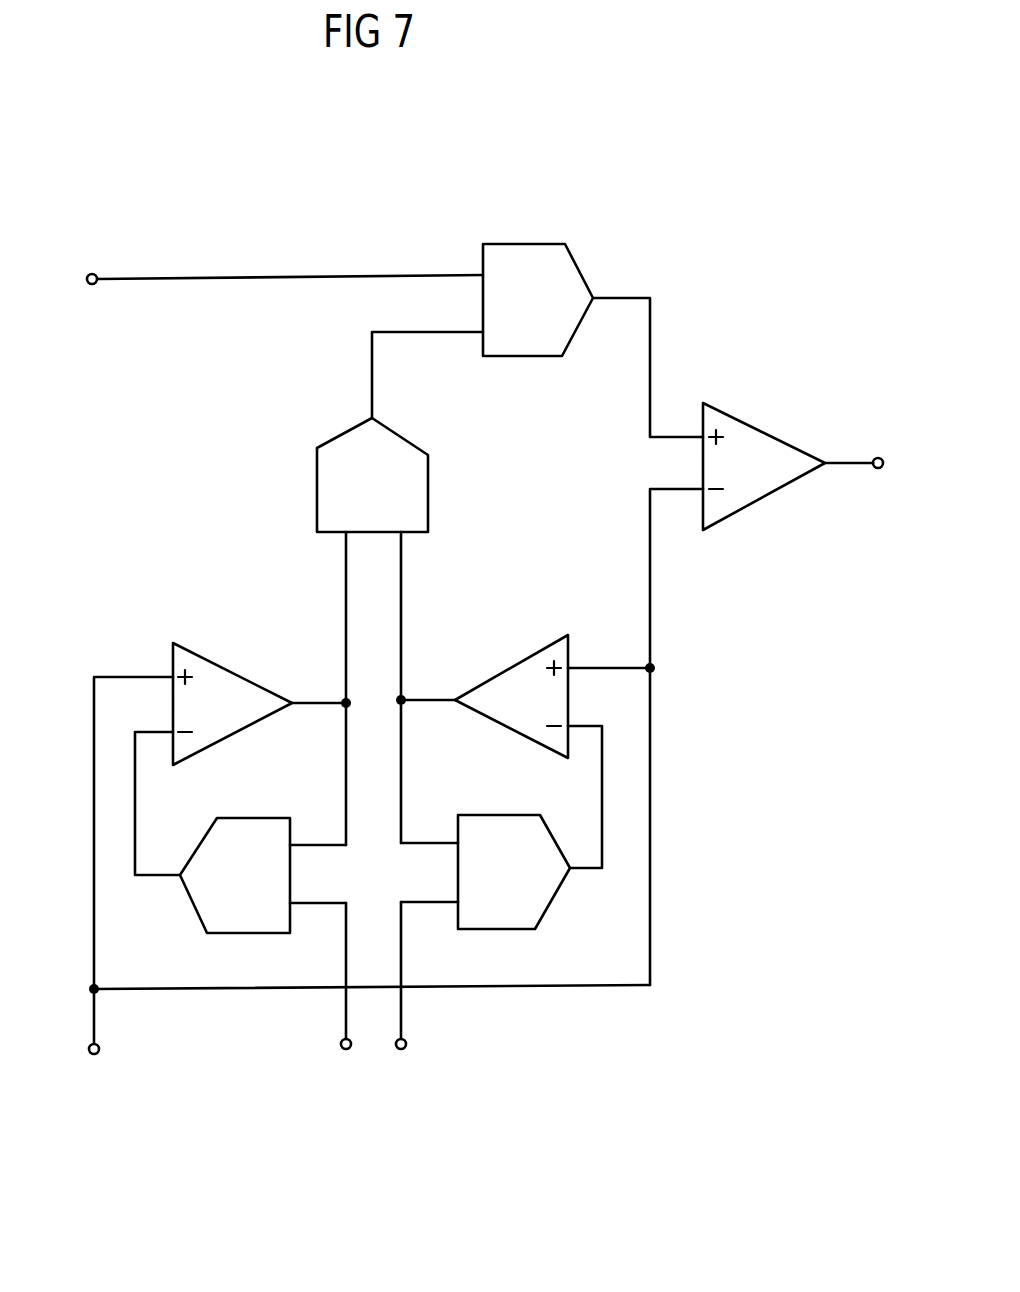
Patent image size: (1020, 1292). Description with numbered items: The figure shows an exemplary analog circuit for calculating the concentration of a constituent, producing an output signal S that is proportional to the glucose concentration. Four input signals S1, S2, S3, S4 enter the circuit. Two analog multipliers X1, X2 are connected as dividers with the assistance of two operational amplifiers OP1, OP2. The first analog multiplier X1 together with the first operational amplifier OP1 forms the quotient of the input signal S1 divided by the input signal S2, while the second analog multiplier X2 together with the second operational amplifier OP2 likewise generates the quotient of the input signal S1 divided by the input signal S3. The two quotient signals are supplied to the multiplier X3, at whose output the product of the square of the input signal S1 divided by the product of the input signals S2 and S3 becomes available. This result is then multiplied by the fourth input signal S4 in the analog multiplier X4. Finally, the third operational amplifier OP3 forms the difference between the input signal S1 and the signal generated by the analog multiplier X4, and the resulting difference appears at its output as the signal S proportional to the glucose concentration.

The analog multiplier X1 is at (235, 875).
The analog multiplier X2 is at (514, 872).
The multiplier X3 is at (372, 475).
The analog multiplier X4 is at (538, 300).
The operational amplifier OP1 is at (232, 704).
The operational amplifier OP2 is at (511, 696).
The operational amplifier OP3 is at (788, 466).
The input signal S1 is at (101, 1079).
The input signal S2 is at (351, 1075).
The input signal S3 is at (408, 1075).
The input signal S4 is at (72, 280).
The signal proportional to the glucose concentration S is at (894, 463).